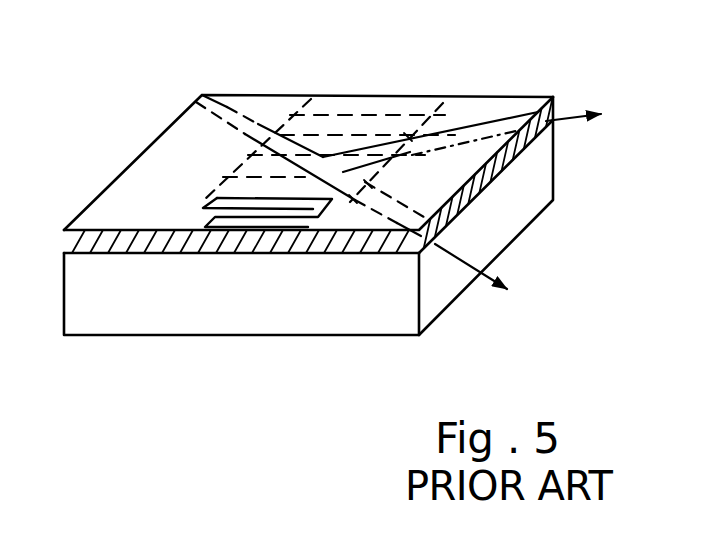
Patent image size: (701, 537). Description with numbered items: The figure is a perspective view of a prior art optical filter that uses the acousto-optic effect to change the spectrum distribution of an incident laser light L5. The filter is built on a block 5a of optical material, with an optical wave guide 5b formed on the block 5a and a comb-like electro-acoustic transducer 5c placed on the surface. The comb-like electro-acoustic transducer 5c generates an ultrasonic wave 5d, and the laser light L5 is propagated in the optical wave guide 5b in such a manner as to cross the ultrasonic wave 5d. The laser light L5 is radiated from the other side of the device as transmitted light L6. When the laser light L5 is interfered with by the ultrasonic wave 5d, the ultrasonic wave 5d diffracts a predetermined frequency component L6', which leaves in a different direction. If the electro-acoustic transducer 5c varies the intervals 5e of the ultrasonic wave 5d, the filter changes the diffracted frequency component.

The block of optical material 5a is at (112, 317).
The optical wave guide 5b is at (166, 128).
The comb-like electro-acoustic transducer 5c is at (200, 222).
The ultrasonic wave 5d is at (353, 115).
The intervals of the ultrasonic wave 5e is at (379, 134).
The incident laser light L5 is at (190, 96).
The transmitted light L6 is at (473, 239).
The diffracted frequency component L6' is at (588, 88).